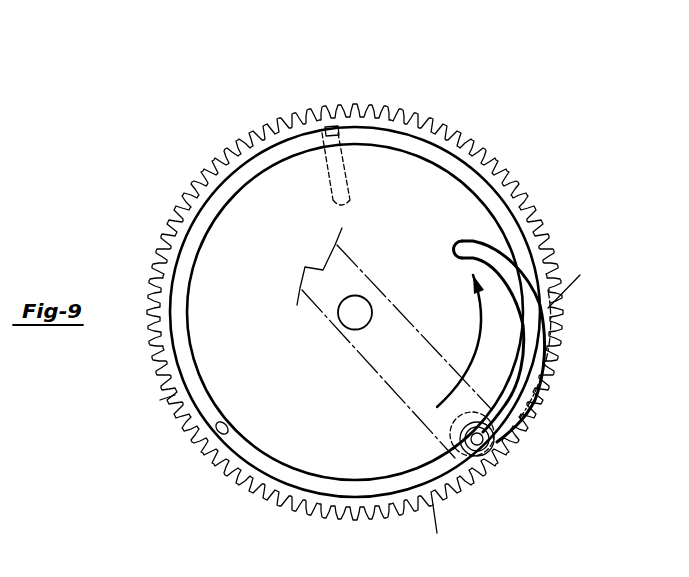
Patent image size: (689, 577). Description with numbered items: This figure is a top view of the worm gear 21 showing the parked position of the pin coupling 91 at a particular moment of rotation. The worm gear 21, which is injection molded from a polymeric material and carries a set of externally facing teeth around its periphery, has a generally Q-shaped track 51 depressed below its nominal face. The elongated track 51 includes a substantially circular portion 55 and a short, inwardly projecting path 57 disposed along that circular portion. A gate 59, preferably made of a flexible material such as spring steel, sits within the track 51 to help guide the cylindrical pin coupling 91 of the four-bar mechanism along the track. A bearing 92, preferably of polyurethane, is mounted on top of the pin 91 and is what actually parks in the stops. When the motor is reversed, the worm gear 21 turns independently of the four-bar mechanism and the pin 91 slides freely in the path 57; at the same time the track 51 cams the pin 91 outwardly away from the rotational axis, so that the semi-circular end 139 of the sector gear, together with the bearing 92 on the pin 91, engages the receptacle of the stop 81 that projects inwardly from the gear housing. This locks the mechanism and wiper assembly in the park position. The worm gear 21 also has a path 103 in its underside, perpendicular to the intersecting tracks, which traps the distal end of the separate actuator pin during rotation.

The worm gear 21 is at (472, 143).
The path 103 is at (325, 130).
The inwardly projecting path 57 is at (478, 238).
The gate 59 is at (514, 270).
The pin coupling 91 is at (497, 452).
The bearing 92 is at (500, 438).
The semi-circular end 139 is at (510, 424).
The stop 81 is at (472, 482).
The track 51 is at (212, 440).
The circular portion 55 is at (174, 390).